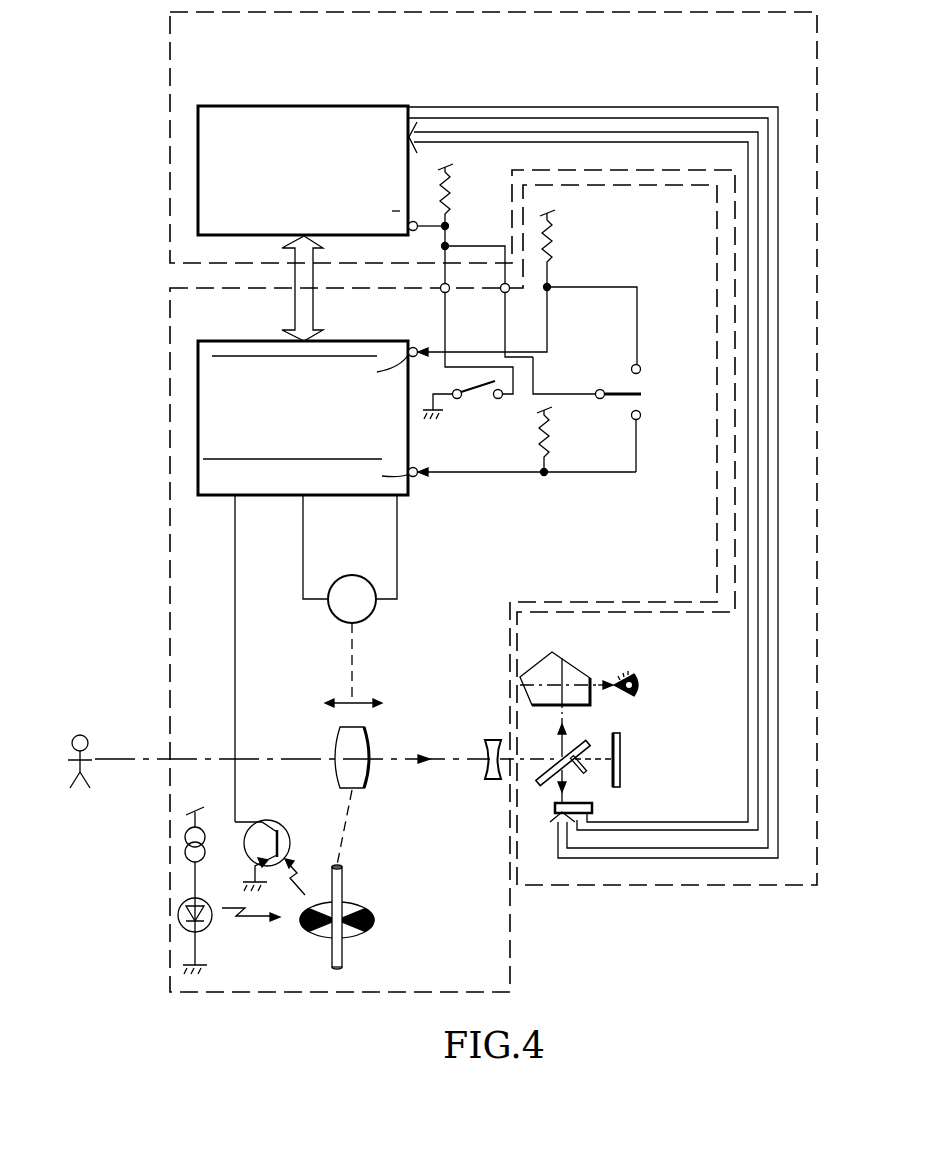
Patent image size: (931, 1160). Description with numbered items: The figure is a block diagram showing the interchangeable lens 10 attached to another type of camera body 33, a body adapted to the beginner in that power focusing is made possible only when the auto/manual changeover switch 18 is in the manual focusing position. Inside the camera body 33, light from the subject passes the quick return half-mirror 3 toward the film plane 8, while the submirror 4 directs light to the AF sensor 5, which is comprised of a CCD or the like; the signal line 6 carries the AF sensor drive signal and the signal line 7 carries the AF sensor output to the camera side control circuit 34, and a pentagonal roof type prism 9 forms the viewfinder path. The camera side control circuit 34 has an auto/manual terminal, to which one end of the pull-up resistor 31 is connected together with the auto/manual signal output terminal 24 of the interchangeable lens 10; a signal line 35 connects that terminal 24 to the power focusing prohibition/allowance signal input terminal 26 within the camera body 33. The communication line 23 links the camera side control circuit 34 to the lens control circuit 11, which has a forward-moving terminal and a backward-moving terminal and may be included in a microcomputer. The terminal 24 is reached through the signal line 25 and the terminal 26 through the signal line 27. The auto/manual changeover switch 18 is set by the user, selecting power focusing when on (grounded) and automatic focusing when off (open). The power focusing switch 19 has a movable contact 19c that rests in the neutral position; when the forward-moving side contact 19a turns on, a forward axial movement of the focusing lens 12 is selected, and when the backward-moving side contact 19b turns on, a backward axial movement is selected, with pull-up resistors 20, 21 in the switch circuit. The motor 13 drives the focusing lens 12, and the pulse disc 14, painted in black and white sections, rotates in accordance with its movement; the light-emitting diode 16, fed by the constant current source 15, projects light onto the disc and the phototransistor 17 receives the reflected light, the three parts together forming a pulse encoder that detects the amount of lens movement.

The quick return half-mirror 3 is at (569, 748).
The submirror 4 is at (584, 775).
The AF sensor 5 is at (555, 807).
The signal line for the AF sensor drive signal 6 is at (683, 856).
The signal line for the AF sensor output 7 is at (712, 830).
The film plane 8 is at (622, 771).
The pentagonal roof type prism 9 is at (555, 660).
The interchangeable lens 10 is at (289, 995).
The lens control circuit 11 is at (231, 340).
The focusing lens 12 is at (369, 742).
The motor 13 is at (375, 613).
The pulse disc 14 is at (373, 915).
The constant current source 15 is at (205, 855).
The light-emitting diode 16 is at (211, 928).
The phototransistor 17 is at (271, 820).
The auto/manual changeover switch 18 is at (473, 406).
The power focusing switch 19 is at (622, 379).
The forward-moving side contact 19a is at (644, 368).
The backward-moving side contact 19b is at (641, 421).
The movable contact 19c is at (606, 386).
The pull-up resistor 20 is at (553, 250).
The pull-up resistor 21 is at (551, 440).
The communication line 23 is at (314, 318).
The auto/manual signal output terminal 24 is at (441, 293).
The signal line 25 is at (448, 341).
The power focusing prohibition/allowance signal input terminal 26 is at (508, 294).
The signal line 27 is at (540, 381).
The pull-up resistor 31 is at (450, 194).
The camera body 33 is at (605, 887).
The camera side control circuit 34 is at (272, 105).
The signal line 35 is at (470, 245).